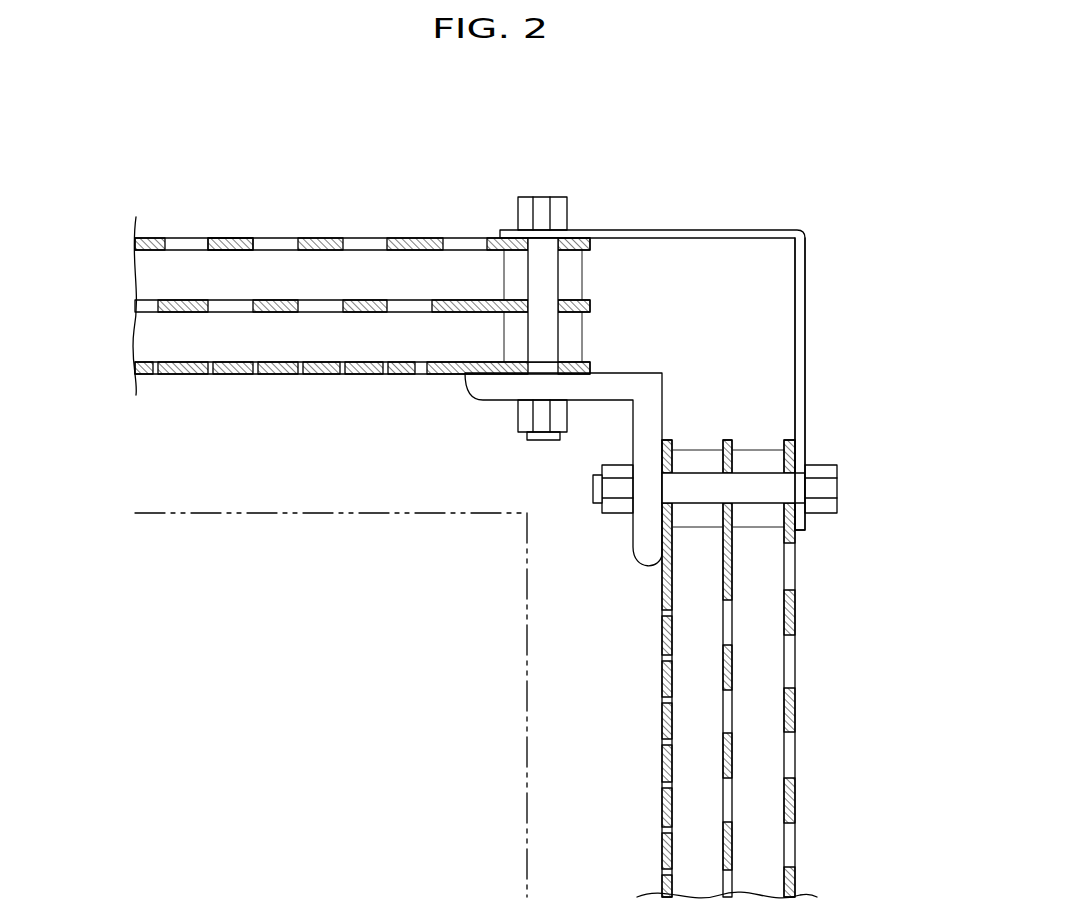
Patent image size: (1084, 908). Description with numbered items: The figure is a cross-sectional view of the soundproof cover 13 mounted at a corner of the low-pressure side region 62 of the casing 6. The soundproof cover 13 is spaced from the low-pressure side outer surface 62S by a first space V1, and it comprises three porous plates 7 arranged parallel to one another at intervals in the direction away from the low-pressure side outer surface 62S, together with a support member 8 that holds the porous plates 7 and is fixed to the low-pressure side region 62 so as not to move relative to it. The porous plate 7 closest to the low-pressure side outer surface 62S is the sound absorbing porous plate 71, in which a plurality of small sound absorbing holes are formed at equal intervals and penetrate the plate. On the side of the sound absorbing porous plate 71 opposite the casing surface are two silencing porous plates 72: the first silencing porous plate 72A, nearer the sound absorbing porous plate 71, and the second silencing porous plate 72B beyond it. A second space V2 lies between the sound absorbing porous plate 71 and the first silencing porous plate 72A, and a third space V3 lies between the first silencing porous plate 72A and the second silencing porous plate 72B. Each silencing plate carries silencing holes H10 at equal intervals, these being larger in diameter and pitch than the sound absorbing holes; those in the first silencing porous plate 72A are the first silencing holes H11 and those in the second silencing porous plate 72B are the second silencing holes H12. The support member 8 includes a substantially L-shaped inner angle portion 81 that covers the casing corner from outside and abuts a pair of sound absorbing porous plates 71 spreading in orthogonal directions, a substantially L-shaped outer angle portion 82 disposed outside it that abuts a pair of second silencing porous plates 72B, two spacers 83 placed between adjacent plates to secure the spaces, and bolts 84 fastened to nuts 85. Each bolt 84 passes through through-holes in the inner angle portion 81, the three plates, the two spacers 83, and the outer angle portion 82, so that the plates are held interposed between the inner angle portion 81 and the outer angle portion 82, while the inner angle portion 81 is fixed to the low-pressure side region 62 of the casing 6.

The soundproof cover 13 is at (176, 116).
The porous plate 7 is at (668, 438).
The sound absorbing porous plate 71 is at (362, 629).
The silencing porous plate 72 is at (502, 520).
The first silencing porous plate 72A is at (728, 440).
The second silencing porous plate 72B is at (791, 438).
The first space V1 is at (181, 411).
The second space V2 is at (176, 346).
The third space V3 is at (170, 279).
The silencing hole H10 is at (276, 142).
The first silencing hole H11 is at (245, 238).
The second silencing hole H12 is at (297, 238).
The support member 8 is at (808, 240).
The outer angle portion 82 is at (808, 268).
The inner angle portion 81 is at (487, 393).
The spacer 83 is at (508, 268).
The bolt 84 is at (566, 204).
The nut 85 is at (540, 426).
The casing 6 is at (312, 510).
The low-pressure side region 62 is at (331, 663).
The low-pressure side outer surface 62S is at (205, 510).